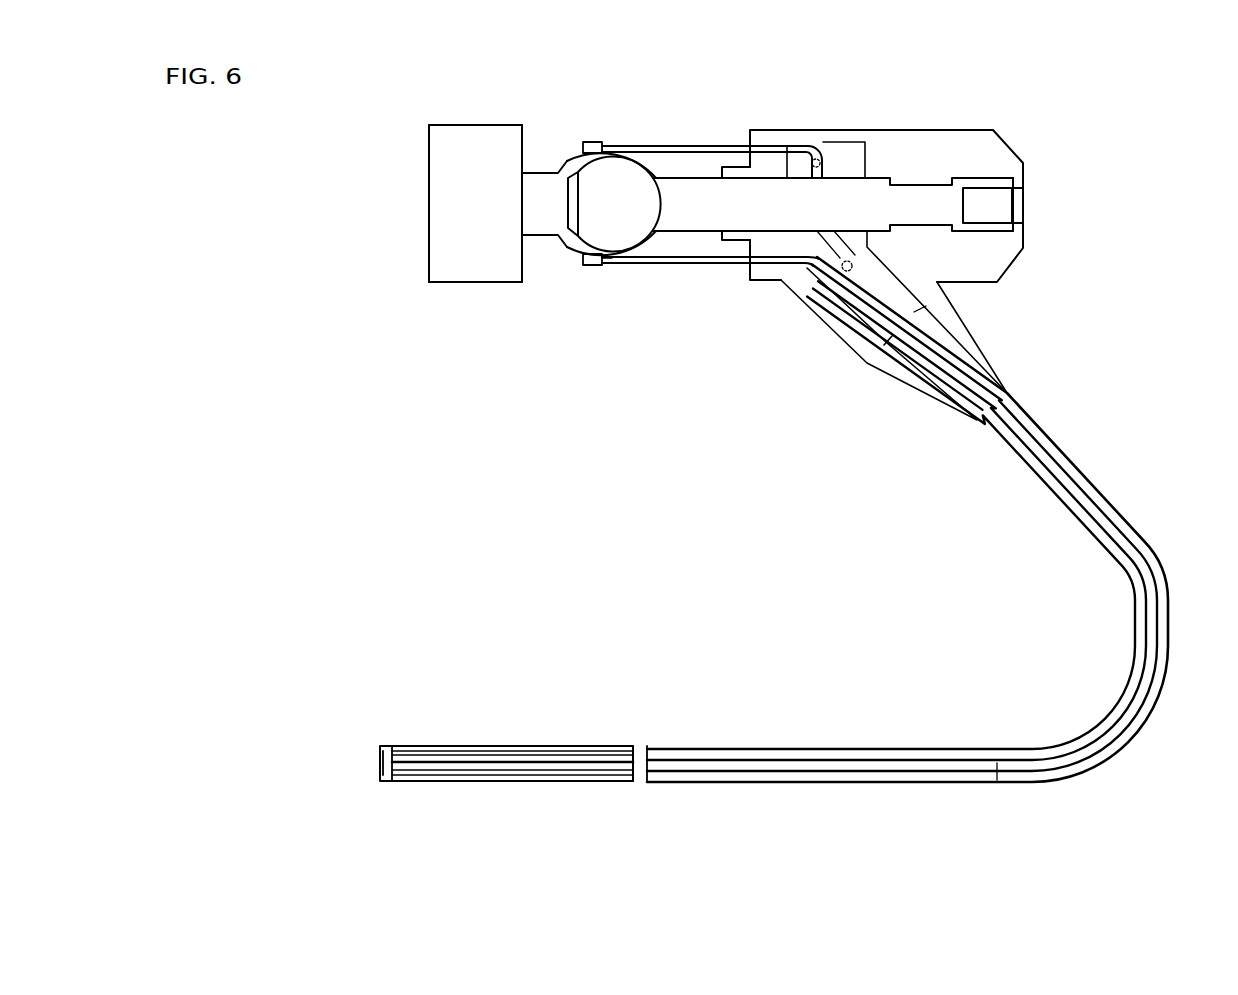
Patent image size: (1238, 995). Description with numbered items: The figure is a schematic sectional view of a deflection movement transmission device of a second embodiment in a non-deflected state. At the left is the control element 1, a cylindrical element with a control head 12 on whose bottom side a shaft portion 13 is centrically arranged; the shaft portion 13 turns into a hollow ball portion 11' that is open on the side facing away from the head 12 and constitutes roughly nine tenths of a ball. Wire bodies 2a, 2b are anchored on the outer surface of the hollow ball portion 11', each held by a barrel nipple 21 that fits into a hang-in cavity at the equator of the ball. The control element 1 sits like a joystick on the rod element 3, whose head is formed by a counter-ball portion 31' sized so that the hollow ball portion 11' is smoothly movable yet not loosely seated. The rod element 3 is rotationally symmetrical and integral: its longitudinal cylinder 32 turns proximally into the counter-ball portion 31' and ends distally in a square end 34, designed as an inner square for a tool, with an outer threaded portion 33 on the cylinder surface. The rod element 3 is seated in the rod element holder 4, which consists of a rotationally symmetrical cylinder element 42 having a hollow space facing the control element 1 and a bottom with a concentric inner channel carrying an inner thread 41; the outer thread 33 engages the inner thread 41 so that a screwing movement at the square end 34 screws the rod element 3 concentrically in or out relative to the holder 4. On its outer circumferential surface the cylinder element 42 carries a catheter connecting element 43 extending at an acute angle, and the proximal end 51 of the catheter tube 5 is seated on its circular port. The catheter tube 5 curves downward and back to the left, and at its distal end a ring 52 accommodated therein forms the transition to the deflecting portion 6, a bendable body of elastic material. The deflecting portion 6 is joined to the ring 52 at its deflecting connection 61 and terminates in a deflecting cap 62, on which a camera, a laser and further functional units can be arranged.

The control element 1 is at (485, 268).
The control head 12 is at (471, 135).
The shaft portion 13 is at (546, 170).
The hollow ball portion 11' is at (602, 236).
The counter-ball portion 31' is at (614, 274).
The barrel nipple 21 is at (593, 142).
The wire body 2a is at (676, 146).
The wire body 2b is at (667, 260).
The rod element 3 is at (855, 186).
The longitudinal cylinder 32 is at (766, 188).
The outer threaded portion 33 is at (923, 222).
The square end 34 is at (998, 186).
The rod element holder 4 is at (993, 153).
The inner thread 41 is at (928, 174).
The cylinder element 42 is at (835, 135).
The catheter connecting element 43 is at (928, 390).
The catheter tube 5 is at (1110, 500).
The proximal end 51 is at (1007, 395).
The ring 52 is at (646, 781).
The deflecting portion 6 is at (465, 745).
The deflecting connection 61 is at (637, 745).
The deflecting cap 62 is at (385, 763).